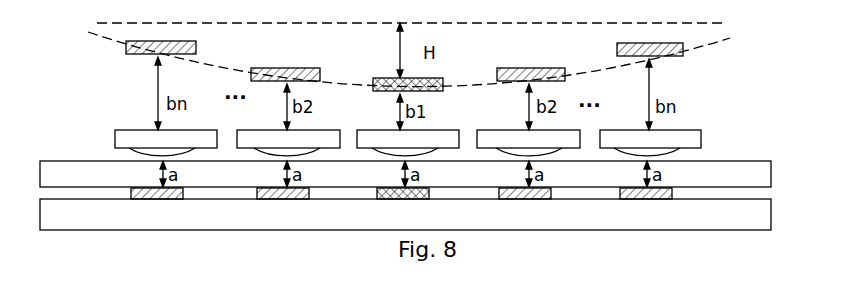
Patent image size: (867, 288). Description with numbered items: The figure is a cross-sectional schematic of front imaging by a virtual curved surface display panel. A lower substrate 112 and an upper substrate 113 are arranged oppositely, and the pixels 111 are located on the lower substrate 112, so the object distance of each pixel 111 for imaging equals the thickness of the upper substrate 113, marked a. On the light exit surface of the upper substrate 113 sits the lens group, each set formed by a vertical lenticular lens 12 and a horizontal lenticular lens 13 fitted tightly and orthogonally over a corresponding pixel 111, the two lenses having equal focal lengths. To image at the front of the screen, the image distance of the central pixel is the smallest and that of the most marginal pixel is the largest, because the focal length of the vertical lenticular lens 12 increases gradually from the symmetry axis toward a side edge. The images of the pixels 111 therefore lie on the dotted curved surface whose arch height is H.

The horizontal lenticular lens 13 is at (660, 136).
The vertical lenticular lens 12 is at (657, 152).
The upper substrate 113 is at (762, 174).
The pixel 111 is at (672, 190).
The lower substrate 112 is at (755, 210).